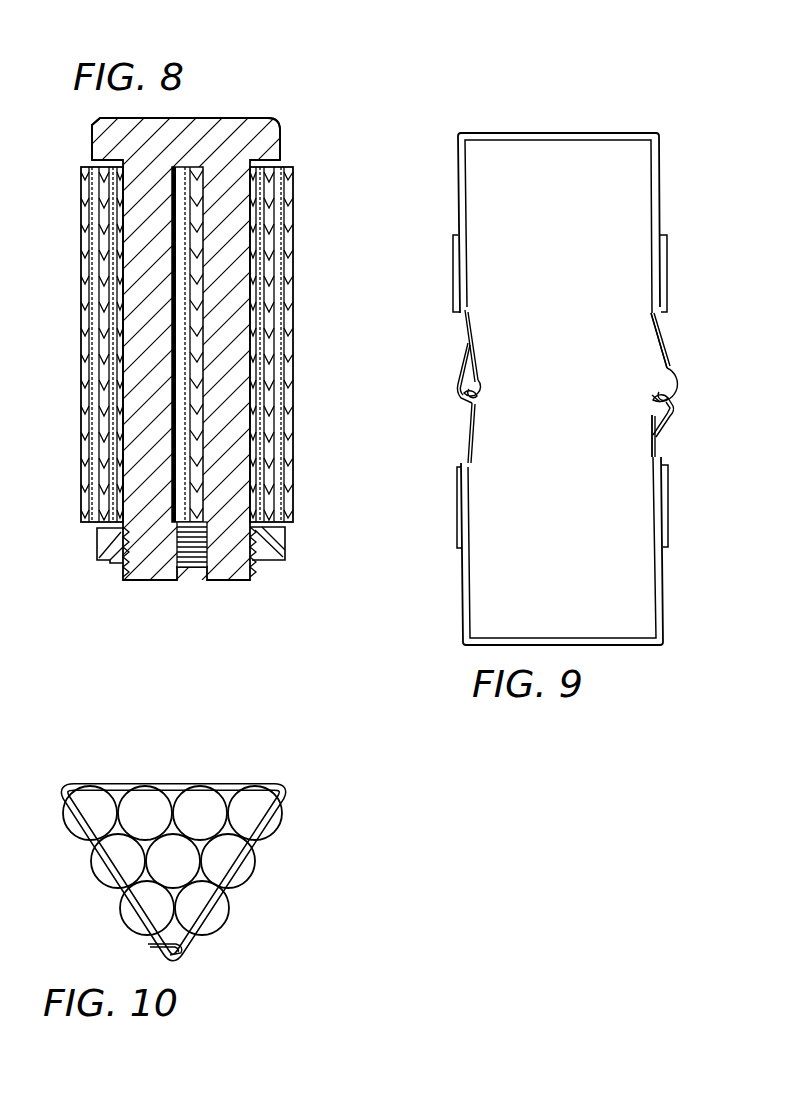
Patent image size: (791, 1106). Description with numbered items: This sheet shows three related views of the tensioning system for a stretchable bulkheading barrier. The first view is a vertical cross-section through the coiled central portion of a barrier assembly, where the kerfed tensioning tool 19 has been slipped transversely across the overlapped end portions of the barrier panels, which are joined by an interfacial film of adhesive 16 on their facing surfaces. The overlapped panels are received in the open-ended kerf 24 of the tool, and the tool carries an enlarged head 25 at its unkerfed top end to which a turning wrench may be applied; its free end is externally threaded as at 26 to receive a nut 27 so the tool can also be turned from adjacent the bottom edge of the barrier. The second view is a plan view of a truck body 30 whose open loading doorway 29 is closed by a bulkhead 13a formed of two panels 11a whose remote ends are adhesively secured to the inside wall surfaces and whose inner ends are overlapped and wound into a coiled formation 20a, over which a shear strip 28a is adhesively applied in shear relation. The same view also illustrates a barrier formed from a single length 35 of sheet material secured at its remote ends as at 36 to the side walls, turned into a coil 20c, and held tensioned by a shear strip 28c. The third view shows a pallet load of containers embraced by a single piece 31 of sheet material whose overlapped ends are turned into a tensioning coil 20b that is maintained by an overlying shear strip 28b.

In FIG. 8, the enlarged head 25 is at (186, 139).
In FIG. 8, the kerfed tensioning tool 19 is at (273, 136).
In FIG. 8, the interfacial film of adhesive 16 is at (199, 299).
In FIG. 8, the open-ended kerf 24 is at (203, 378).
In FIG. 8, the nut 27 is at (277, 544).
In FIG. 8, the external threads 26 is at (244, 548).
In FIG. 9, the truck body 30 is at (463, 593).
In FIG. 9, the adhesively secured ends 36 is at (470, 484).
In FIG. 9, the single length of stretchable sheet material 35 is at (473, 438).
In FIG. 9, the coiled formation 20c is at (479, 388).
In FIG. 9, the shear strip 28c is at (460, 384).
In FIG. 9, the open loading doorway 29 is at (660, 316).
In FIG. 9, the panels 11a is at (652, 458).
In FIG. 9, the coiled formation 20a is at (664, 387).
In FIG. 9, the shear strip 28a is at (672, 415).
In FIG. 9, the bulkhead 13a is at (638, 408).
In FIG. 10, the single piece of sheet material 31 is at (272, 851).
In FIG. 10, the tensioning coil 20b is at (182, 937).
In FIG. 10, the shear strip 28b is at (157, 948).